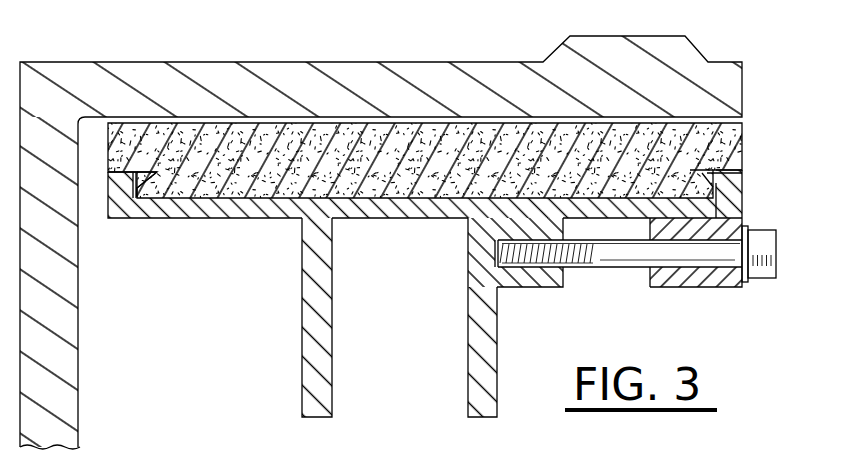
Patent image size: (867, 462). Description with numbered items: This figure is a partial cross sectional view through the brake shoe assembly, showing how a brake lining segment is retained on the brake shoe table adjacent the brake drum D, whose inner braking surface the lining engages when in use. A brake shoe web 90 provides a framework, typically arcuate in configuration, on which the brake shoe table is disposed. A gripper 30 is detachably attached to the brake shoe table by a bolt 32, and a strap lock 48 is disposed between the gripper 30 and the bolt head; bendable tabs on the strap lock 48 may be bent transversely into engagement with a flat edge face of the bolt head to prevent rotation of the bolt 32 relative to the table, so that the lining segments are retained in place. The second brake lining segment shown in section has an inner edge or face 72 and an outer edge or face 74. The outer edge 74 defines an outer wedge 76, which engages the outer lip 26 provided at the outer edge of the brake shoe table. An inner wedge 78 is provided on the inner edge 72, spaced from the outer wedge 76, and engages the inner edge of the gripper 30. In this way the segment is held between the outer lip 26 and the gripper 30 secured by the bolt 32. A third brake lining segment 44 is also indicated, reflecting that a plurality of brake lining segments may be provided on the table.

The brake drum D is at (752, 64).
The outer edge or face 74 is at (108, 137).
The inner edge or face 72 is at (743, 147).
The third brake lining segment 44 is at (388, 184).
The inner wedge 78 is at (745, 195).
The outer wedge 76 is at (147, 212).
The outer lip 26 is at (113, 163).
The brake shoe web 90 is at (468, 315).
The gripper 30 is at (712, 294).
The strap lock 48 is at (752, 283).
The bolt 32 is at (776, 244).